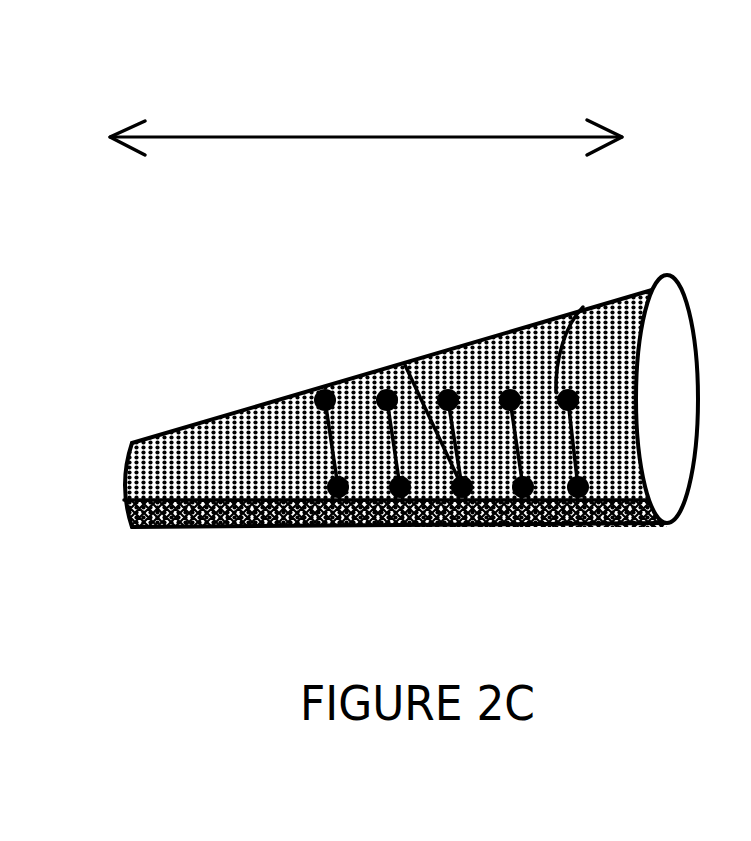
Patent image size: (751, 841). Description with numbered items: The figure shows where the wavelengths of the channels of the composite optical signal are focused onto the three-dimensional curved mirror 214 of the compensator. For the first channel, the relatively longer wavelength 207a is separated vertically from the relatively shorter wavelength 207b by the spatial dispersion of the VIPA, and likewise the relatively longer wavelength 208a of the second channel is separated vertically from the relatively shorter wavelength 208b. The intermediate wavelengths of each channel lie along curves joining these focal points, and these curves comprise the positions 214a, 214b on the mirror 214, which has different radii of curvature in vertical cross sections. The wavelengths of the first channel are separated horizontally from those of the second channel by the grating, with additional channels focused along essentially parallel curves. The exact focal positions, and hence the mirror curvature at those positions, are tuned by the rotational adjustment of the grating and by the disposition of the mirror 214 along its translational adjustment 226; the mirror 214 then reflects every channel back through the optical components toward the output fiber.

The translational adjustment 226 is at (363, 137).
The 3-dimensional curved mirror 214 is at (173, 433).
The position 214a is at (583, 307).
The position 214b is at (405, 365).
The relatively longer wavelength 207a is at (553, 527).
The relatively shorter wavelength 207b is at (510, 400).
The relatively longer wavelength 208a is at (480, 527).
The relatively shorter wavelength 208b is at (447, 400).